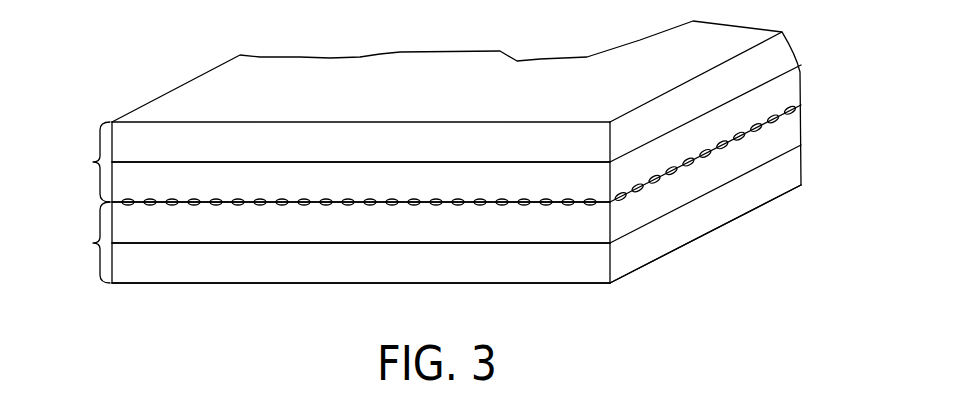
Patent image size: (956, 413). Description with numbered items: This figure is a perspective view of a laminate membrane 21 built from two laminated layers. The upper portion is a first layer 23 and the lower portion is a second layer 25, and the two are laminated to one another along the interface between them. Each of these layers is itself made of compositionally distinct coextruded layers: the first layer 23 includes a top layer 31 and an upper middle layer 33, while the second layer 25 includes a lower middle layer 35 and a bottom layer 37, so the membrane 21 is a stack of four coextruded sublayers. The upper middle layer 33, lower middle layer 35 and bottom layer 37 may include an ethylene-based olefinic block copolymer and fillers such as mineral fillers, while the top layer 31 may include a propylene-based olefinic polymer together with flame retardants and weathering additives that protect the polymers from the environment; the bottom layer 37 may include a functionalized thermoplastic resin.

The membrane 21 is at (772, 222).
The first layer 23 is at (429, 106).
The second layer 25 is at (429, 241).
The top layer 31 is at (240, 140).
The upper middle layer 33 is at (287, 185).
The lower middle layer 35 is at (205, 230).
The bottom layer 37 is at (285, 268).